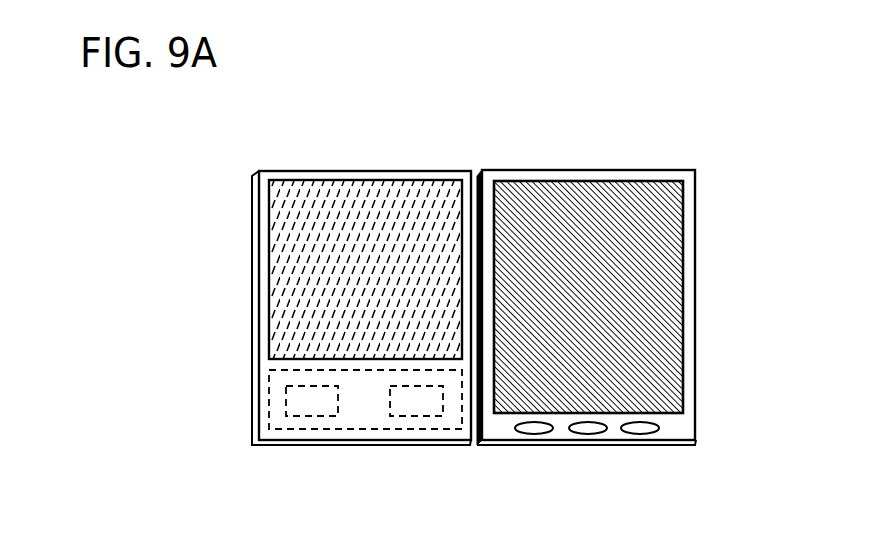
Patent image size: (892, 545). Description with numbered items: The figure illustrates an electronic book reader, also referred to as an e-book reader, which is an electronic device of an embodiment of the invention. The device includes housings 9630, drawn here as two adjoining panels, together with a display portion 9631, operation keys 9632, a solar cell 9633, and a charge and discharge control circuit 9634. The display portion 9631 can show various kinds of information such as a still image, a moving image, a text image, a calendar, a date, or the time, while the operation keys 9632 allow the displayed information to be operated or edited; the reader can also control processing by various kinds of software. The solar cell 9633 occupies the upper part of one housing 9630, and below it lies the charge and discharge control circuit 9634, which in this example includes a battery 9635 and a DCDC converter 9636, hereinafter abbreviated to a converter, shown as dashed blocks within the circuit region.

The housings 9630 is at (474, 277).
The display portion 9631 is at (623, 297).
The operation keys 9632 is at (587, 459).
The solar cell 9633 is at (363, 238).
The charge and discharge control circuit 9634 is at (312, 410).
The battery 9635 is at (316, 436).
The DCDC converter 9636 is at (425, 436).